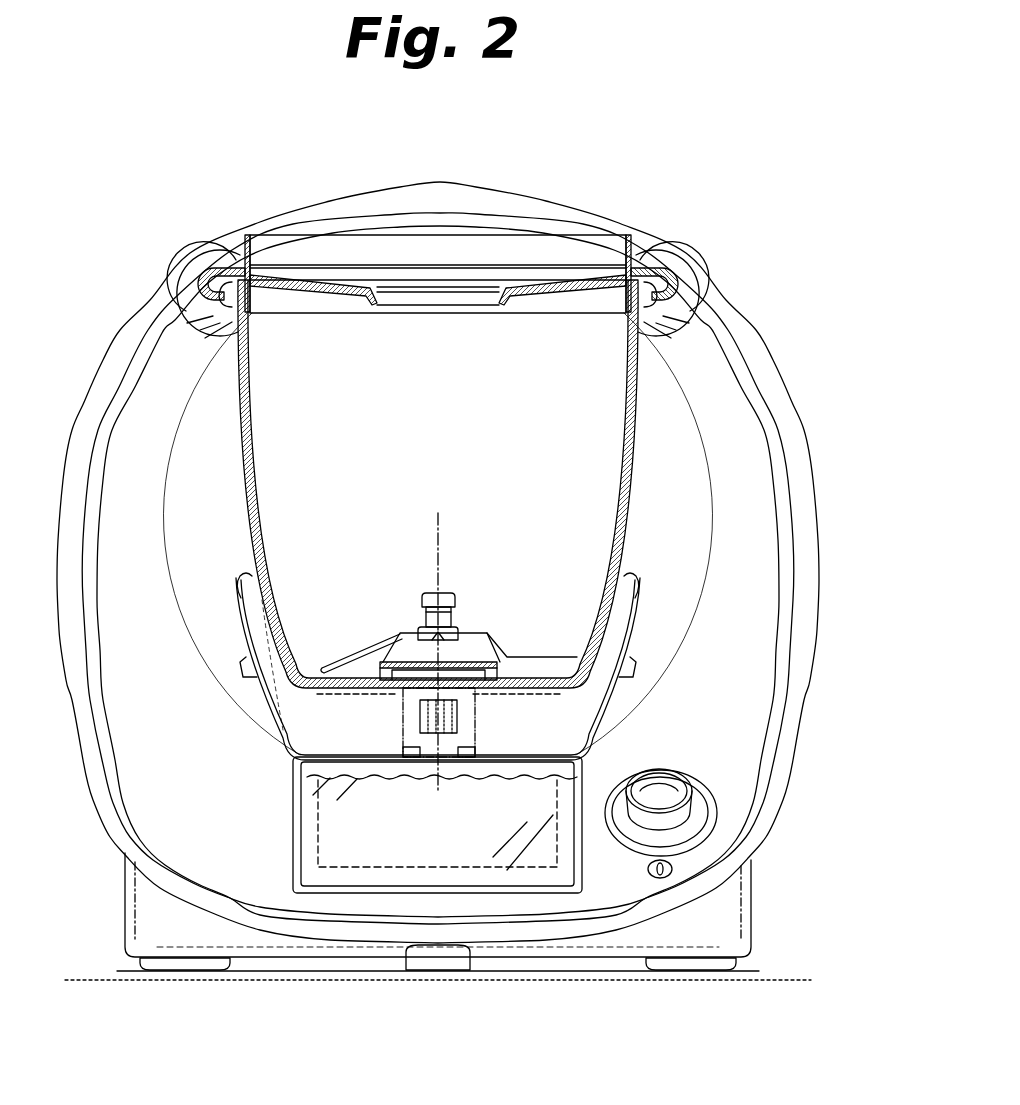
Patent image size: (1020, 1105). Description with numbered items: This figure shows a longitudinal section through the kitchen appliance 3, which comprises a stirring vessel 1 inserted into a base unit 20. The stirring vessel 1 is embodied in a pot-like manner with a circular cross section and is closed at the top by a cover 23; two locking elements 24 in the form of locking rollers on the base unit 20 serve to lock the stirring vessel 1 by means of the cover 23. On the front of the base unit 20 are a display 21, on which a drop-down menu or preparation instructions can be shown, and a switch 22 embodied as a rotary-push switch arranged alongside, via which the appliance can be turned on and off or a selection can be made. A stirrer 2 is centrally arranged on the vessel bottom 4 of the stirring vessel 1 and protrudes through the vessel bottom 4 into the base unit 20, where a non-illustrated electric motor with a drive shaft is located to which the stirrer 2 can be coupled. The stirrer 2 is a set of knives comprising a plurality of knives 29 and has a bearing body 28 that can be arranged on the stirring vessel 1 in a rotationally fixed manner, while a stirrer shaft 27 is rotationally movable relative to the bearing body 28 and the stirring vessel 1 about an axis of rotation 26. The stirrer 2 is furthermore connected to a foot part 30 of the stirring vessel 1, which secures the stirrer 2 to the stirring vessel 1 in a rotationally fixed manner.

The stirring vessel 1 is at (240, 396).
The stirrer 2 is at (478, 592).
The kitchen appliance 3 is at (778, 309).
The vessel bottom 4 is at (532, 683).
The base unit 20 is at (735, 743).
The display 21 is at (467, 833).
The switch 22 is at (660, 793).
The cover 23 is at (633, 232).
The locking elements 24 is at (678, 277).
The axis of rotation 26 is at (438, 537).
The stirrer shaft 27 is at (445, 712).
The bearing body 28 is at (447, 665).
The knives 29 is at (372, 650).
The foot part 30 is at (328, 723).